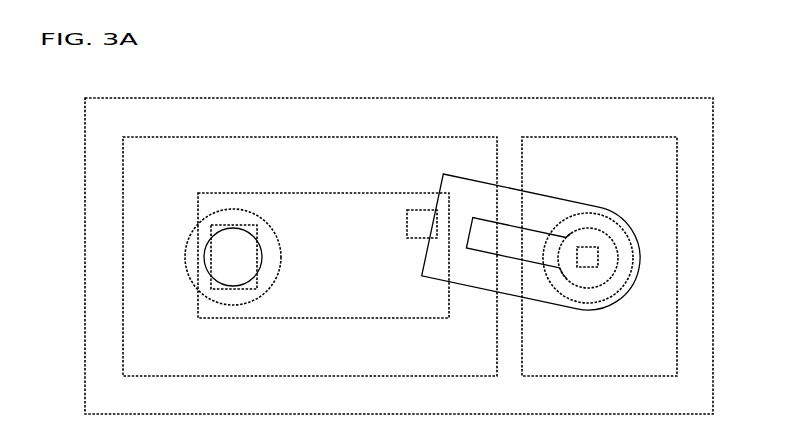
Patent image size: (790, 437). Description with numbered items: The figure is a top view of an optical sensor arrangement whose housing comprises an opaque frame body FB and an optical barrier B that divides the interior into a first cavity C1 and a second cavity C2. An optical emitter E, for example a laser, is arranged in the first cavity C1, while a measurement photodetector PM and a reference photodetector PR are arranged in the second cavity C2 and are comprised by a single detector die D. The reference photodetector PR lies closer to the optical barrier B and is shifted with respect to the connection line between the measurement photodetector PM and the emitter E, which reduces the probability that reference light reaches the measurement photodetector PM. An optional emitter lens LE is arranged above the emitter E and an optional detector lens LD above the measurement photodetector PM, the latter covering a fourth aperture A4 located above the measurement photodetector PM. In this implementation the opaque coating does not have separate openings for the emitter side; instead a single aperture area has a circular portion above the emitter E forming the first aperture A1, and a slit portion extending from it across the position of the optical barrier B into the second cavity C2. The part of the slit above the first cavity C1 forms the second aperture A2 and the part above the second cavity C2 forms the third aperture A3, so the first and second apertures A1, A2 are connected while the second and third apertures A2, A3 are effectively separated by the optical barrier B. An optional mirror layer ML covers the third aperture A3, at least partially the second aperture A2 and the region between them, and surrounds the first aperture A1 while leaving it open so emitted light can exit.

The frame body FB is at (399, 256).
The second cavity C2 is at (310, 256).
The first cavity C1 is at (599, 256).
The optical barrier B is at (508, 160).
The detector die D is at (323, 255).
The detector lens LD is at (275, 277).
The fourth aperture A4 is at (261, 256).
The measurement photodetector PM is at (234, 257).
The mirror layer ML is at (531, 242).
The reference photodetector PR is at (417, 233).
The third aperture A3 is at (480, 243).
The second aperture A2 is at (529, 248).
The first aperture A1 is at (610, 255).
The emitter lens LE is at (605, 300).
The optical emitter E is at (587, 257).